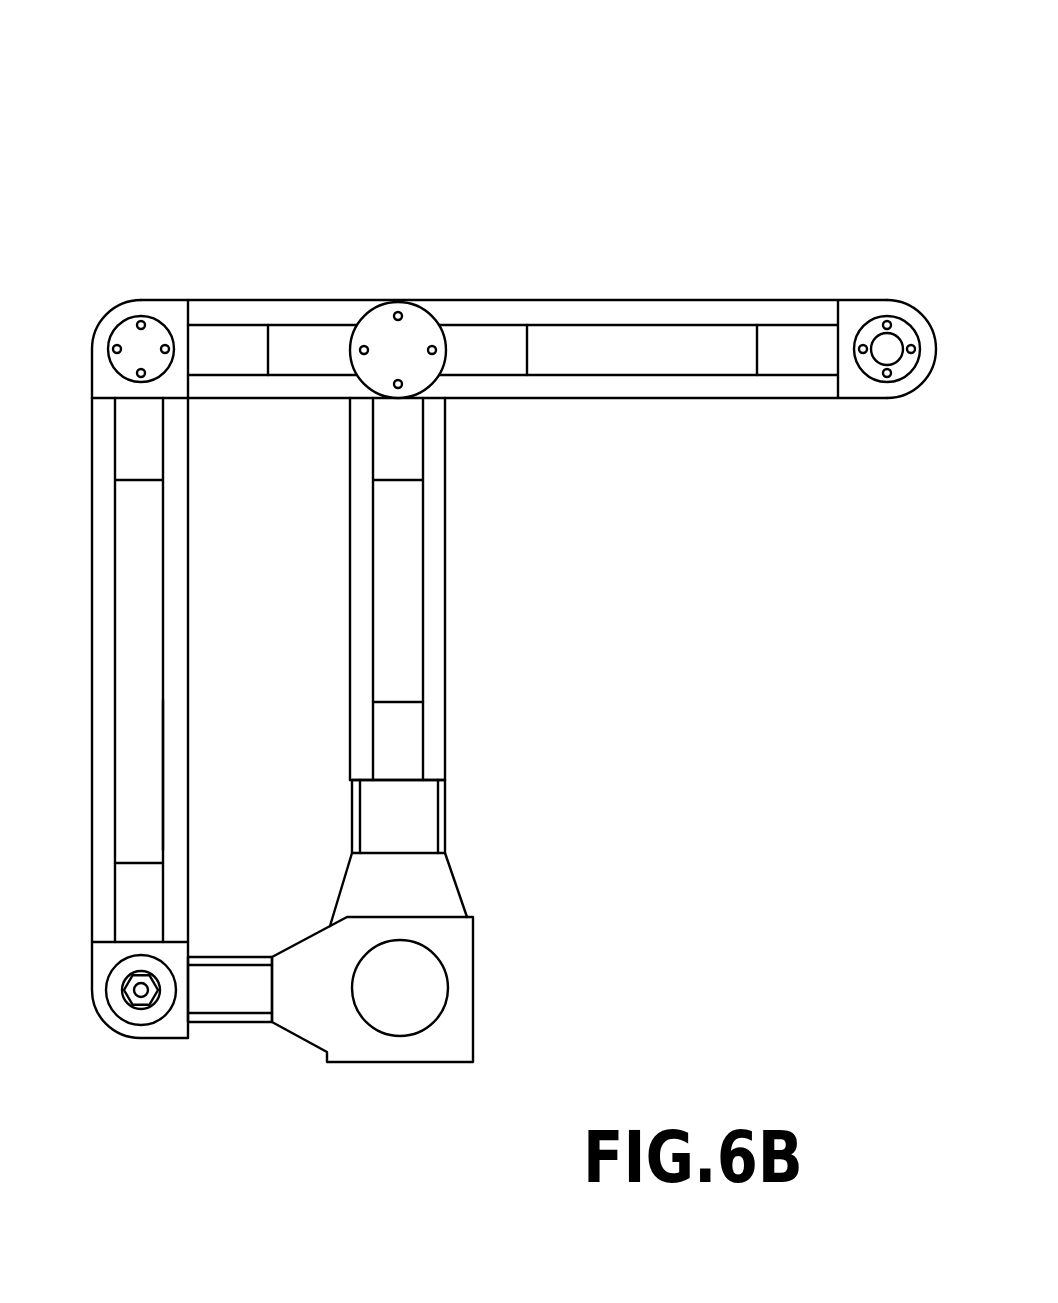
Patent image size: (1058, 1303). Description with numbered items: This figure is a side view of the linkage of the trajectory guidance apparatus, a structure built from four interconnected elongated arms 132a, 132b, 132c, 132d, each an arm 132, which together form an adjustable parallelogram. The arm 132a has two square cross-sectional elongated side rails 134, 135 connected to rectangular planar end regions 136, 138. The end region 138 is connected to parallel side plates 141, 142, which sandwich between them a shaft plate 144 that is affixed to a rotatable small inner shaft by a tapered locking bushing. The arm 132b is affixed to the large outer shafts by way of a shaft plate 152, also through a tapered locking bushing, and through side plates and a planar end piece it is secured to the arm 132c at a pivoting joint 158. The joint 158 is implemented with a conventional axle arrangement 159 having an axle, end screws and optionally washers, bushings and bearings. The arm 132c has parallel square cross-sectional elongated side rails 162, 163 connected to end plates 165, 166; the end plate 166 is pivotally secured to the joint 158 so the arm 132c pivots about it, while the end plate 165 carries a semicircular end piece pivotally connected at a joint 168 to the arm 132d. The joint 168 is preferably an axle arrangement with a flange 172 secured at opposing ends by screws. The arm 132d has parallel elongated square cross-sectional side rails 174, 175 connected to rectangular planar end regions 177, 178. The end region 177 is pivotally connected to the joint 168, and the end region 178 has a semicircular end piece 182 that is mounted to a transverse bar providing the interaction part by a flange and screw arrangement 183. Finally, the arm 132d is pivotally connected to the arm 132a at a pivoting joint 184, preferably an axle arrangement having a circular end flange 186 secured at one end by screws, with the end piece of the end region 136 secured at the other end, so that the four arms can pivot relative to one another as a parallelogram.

The arm 132 is at (740, 128).
The arm 132a is at (574, 647).
The arm 132b is at (215, 1050).
The arm 132c is at (222, 665).
The arm 132d is at (523, 228).
The side rail 134 is at (358, 502).
The side rail 135 is at (443, 532).
The end region 136 is at (403, 433).
The end region 138 is at (398, 737).
The side plate 141 is at (362, 760).
The side plate 142 is at (448, 813).
The shaft plate 144 is at (433, 890).
The shaft plate 152 is at (450, 937).
The pivoting joint 158 is at (145, 1093).
The axle arrangement 159 is at (123, 1000).
The side rail 162 is at (175, 597).
The side rail 163 is at (177, 812).
The end plate 165 is at (142, 448).
The end plate 166 is at (142, 888).
The joint 168 is at (113, 272).
The flange 172 is at (147, 338).
The side rail 174 is at (675, 310).
The side rail 175 is at (668, 382).
The end region 177 is at (230, 350).
The end region 178 is at (797, 347).
The semicircular end piece 182 is at (857, 385).
The flange and screw arrangement 183 is at (863, 322).
The pivoting joint 184 is at (411, 278).
The circular end flange 186 is at (377, 333).